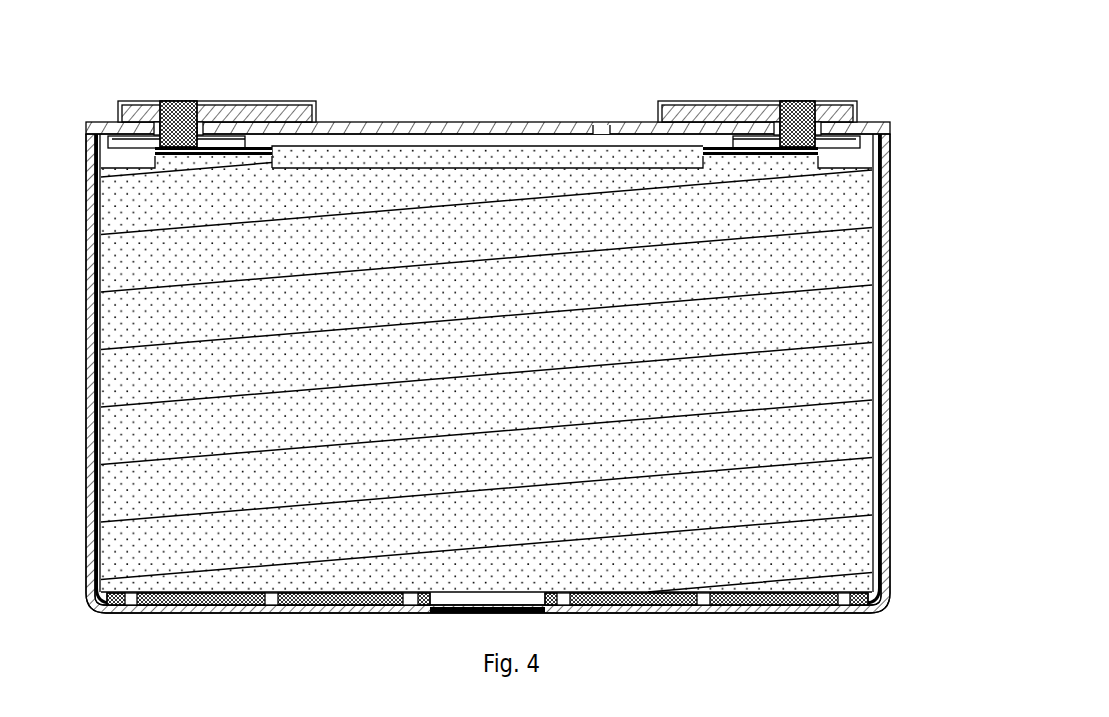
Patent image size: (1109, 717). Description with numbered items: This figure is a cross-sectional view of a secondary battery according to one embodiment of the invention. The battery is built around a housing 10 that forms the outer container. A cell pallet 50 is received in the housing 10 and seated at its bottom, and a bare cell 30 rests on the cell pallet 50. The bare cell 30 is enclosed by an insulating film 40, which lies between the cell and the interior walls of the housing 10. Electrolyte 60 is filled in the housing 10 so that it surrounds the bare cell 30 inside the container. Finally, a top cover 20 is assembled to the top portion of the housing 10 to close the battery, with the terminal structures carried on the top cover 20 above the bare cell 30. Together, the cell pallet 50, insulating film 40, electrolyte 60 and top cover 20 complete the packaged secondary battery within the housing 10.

The housing 10 is at (888, 273).
The top cover 20 is at (539, 122).
The bare cell 30 is at (287, 216).
The insulating film 40 is at (888, 430).
The cell pallet 50 is at (800, 593).
The electrolyte 60 is at (640, 228).